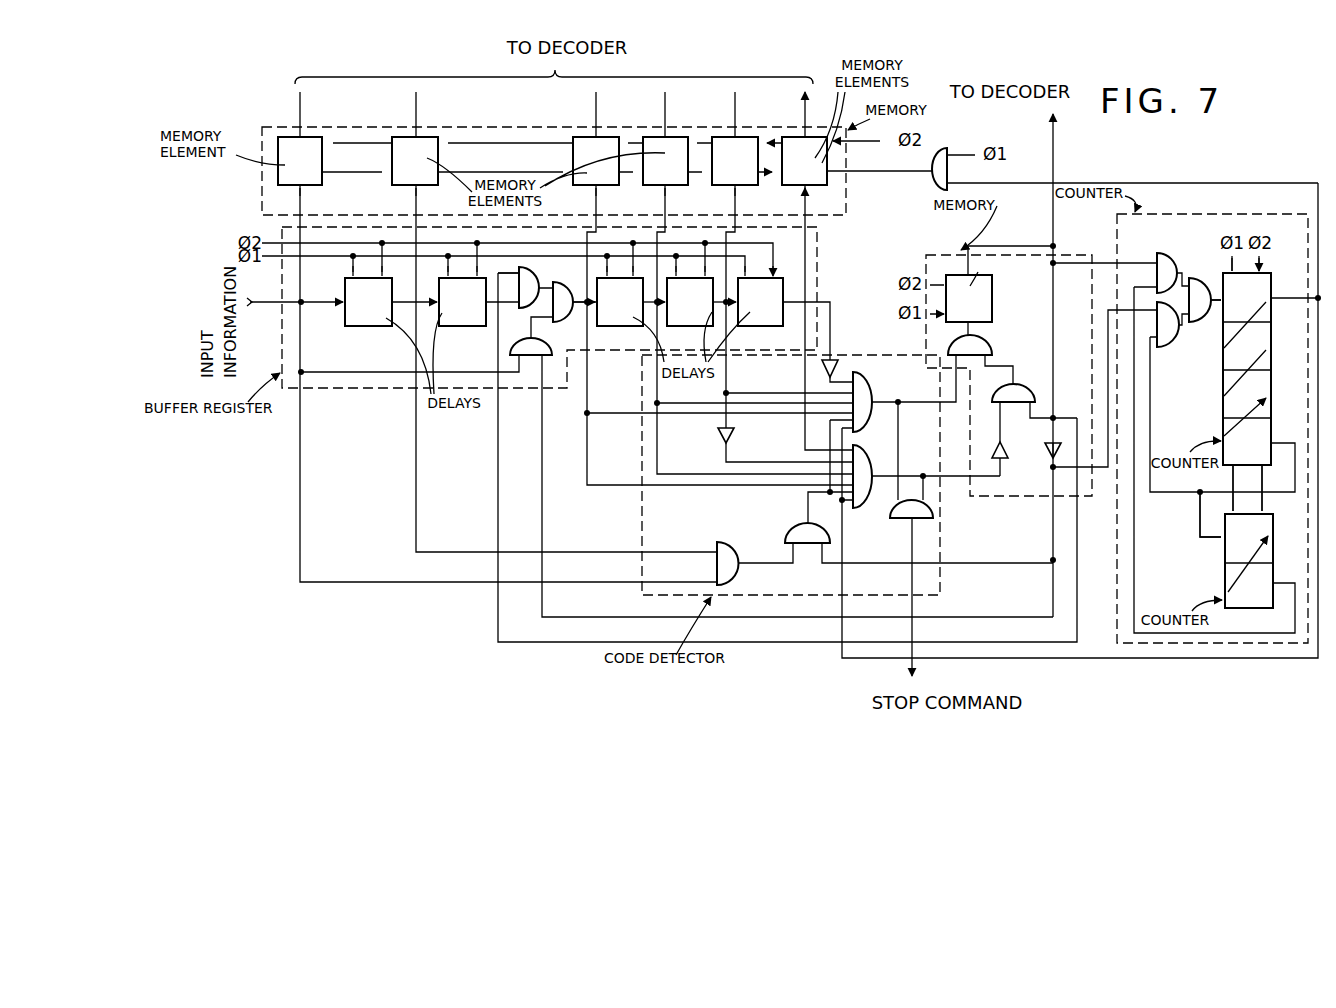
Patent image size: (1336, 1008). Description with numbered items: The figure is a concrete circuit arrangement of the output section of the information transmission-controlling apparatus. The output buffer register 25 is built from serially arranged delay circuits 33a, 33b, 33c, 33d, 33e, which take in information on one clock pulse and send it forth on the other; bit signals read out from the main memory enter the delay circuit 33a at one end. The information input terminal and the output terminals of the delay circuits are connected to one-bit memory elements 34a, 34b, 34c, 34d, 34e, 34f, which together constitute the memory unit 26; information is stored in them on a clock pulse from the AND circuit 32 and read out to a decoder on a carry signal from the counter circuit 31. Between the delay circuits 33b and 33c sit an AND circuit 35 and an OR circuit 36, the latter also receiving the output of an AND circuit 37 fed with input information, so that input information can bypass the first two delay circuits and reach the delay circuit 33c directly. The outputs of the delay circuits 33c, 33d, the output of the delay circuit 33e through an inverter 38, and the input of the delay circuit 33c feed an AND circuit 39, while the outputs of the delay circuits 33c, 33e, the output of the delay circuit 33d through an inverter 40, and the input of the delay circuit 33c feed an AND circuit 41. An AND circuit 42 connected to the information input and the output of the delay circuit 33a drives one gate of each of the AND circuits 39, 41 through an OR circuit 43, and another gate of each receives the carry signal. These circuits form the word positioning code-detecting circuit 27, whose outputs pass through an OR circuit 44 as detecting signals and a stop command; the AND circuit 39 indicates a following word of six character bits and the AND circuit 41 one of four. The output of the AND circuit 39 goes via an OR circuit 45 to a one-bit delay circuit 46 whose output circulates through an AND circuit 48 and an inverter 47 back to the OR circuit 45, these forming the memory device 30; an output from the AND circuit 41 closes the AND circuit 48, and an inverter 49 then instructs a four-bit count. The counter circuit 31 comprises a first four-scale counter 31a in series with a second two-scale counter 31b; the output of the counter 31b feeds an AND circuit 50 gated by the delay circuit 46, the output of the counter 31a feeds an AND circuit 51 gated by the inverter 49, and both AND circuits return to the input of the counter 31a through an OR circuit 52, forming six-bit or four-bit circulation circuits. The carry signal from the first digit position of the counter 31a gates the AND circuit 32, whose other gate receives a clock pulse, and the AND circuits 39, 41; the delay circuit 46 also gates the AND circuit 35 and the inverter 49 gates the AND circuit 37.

The output buffer register 25 is at (373, 389).
The memory unit 26 is at (493, 127).
The word positioning code-detecting circuit 27 is at (641, 532).
The memory device 30 is at (948, 255).
The counter circuit 31 is at (1187, 214).
The first four-scale counter 31a is at (1198, 421).
The second two-scale counter 31b is at (1196, 580).
The AND circuit 32 is at (938, 152).
The delay circuit 33a is at (366, 330).
The delay circuit 33b is at (456, 330).
The delay circuit 33c is at (607, 330).
The delay circuit 33d is at (677, 330).
The delay circuit 33e is at (748, 330).
The one-bit memory element 34a is at (305, 186).
The one-bit memory element 34b is at (425, 186).
The one-bit memory element 34c is at (605, 186).
The one-bit memory element 34d is at (675, 186).
The one-bit memory element 34e is at (745, 186).
The one-bit memory element 34f is at (813, 186).
The AND circuit 35 is at (528, 272).
The OR circuit 36 is at (568, 314).
The AND circuit 37 is at (525, 346).
The inverter 38 is at (832, 358).
The AND circuit 39 is at (870, 390).
The inverter 40 is at (734, 432).
The AND circuit 41 is at (873, 466).
The AND circuit 42 is at (738, 536).
The OR circuit 43 is at (795, 532).
The OR circuit 44 is at (891, 516).
The OR circuit 45 is at (990, 345).
The one-bit delay circuit 46 is at (992, 292).
The inverter 47 is at (993, 450).
The AND circuit 48 is at (1024, 392).
The inverter 49 is at (1046, 448).
The AND circuit 50 is at (1172, 262).
The AND circuit 51 is at (1170, 348).
The OR circuit 52 is at (1204, 324).